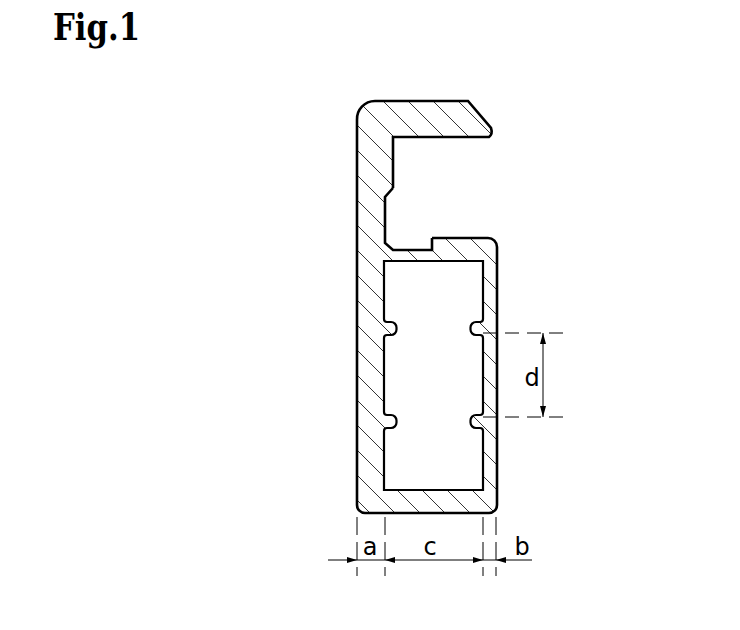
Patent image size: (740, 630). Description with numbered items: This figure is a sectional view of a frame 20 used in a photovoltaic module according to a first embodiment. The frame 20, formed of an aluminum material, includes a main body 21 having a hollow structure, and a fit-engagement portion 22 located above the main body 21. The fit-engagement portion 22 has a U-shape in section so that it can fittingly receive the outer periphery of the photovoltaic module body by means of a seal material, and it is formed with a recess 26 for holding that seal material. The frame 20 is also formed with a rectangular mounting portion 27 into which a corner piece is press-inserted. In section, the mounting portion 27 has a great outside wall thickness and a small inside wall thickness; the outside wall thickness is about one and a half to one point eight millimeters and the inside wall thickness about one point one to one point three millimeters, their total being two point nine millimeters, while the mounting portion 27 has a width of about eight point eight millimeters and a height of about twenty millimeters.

The frame 20 is at (338, 287).
The main body 21 is at (500, 300).
The fit-engagement portion 22 is at (468, 123).
The recess 26 is at (391, 249).
The mounting portion 27 is at (392, 380).